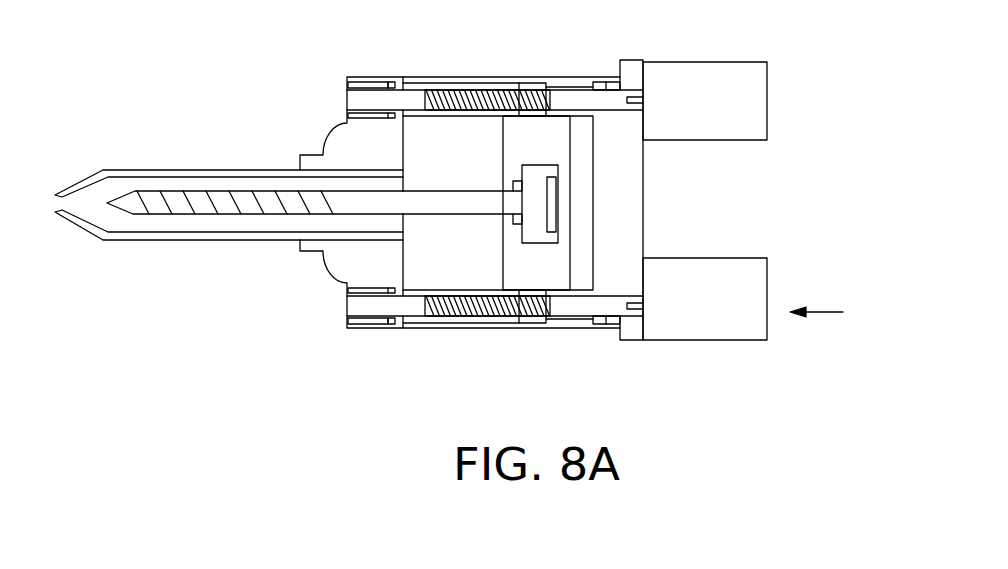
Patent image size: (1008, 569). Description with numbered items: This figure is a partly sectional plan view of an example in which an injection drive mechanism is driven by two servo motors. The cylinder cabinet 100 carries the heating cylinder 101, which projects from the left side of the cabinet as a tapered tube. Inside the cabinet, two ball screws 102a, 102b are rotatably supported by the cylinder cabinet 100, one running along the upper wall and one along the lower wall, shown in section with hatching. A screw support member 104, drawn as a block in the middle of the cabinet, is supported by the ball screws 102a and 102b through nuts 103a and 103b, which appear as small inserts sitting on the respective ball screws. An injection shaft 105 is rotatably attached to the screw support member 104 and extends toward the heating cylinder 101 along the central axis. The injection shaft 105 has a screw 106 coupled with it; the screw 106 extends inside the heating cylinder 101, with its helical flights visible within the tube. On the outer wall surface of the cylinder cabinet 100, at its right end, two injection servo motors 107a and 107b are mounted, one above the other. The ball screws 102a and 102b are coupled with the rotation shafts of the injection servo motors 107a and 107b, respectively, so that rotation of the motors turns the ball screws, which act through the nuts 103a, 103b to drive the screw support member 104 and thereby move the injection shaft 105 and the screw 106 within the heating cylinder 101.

The cylinder cabinet 100 is at (350, 255).
The heating cylinder 101 is at (167, 241).
The ball screw 102a is at (483, 90).
The ball screw 102b is at (450, 316).
The nut 103a is at (543, 88).
The nut 103b is at (540, 323).
The screw support member 104 is at (517, 157).
The injection shaft 105 is at (458, 205).
The screw 106 is at (200, 193).
The injection servo motor 107a is at (767, 95).
The injection servo motor 107b is at (767, 285).